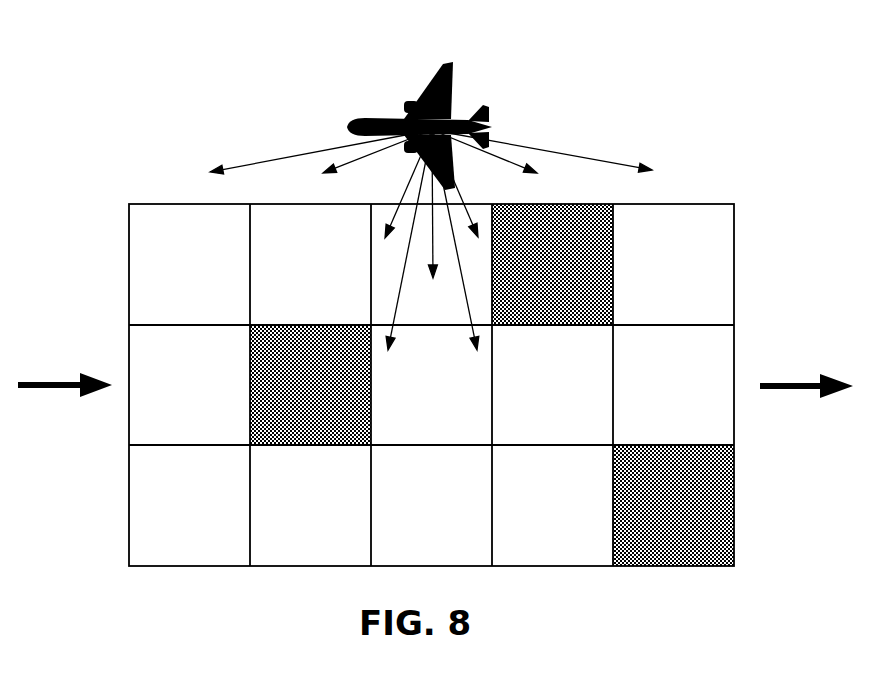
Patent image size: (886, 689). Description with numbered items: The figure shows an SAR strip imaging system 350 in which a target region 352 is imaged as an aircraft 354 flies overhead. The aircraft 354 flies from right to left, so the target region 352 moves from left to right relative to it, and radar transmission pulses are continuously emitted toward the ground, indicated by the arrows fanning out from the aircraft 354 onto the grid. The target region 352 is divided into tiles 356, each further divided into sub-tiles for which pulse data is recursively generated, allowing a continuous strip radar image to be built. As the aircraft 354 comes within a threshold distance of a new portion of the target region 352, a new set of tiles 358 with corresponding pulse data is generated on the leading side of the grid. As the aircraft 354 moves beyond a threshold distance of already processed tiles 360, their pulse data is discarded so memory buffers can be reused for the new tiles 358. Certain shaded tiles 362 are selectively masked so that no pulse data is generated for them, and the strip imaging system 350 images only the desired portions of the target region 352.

The strip imaging system 350 is at (100, 40).
The target region 352 is at (735, 240).
The aircraft 354 is at (378, 118).
The tiles 356 is at (293, 230).
The new tiles 358 is at (173, 230).
The already processed tiles 360 is at (656, 230).
The masked tiles 362 is at (535, 230).